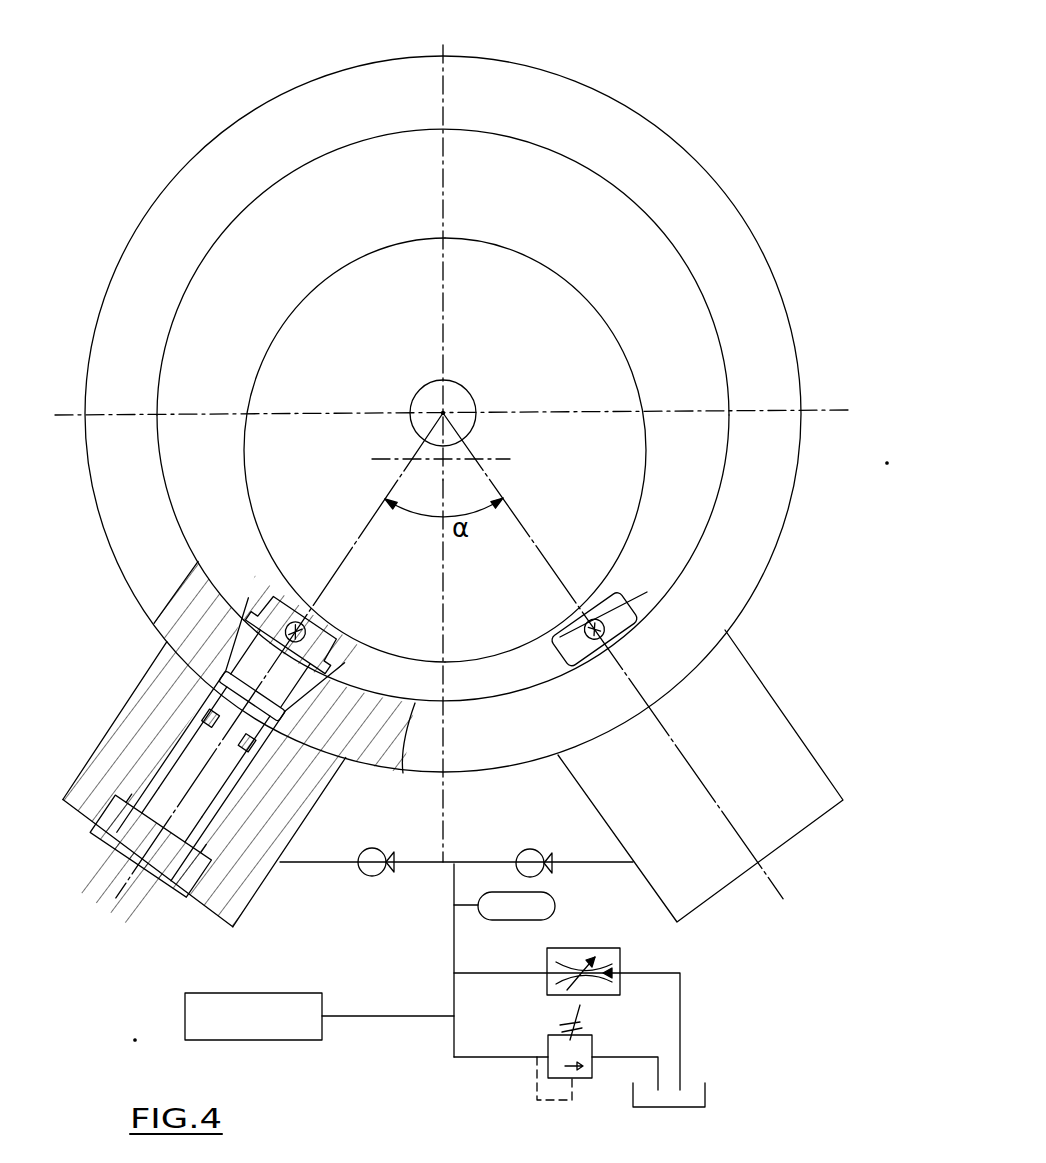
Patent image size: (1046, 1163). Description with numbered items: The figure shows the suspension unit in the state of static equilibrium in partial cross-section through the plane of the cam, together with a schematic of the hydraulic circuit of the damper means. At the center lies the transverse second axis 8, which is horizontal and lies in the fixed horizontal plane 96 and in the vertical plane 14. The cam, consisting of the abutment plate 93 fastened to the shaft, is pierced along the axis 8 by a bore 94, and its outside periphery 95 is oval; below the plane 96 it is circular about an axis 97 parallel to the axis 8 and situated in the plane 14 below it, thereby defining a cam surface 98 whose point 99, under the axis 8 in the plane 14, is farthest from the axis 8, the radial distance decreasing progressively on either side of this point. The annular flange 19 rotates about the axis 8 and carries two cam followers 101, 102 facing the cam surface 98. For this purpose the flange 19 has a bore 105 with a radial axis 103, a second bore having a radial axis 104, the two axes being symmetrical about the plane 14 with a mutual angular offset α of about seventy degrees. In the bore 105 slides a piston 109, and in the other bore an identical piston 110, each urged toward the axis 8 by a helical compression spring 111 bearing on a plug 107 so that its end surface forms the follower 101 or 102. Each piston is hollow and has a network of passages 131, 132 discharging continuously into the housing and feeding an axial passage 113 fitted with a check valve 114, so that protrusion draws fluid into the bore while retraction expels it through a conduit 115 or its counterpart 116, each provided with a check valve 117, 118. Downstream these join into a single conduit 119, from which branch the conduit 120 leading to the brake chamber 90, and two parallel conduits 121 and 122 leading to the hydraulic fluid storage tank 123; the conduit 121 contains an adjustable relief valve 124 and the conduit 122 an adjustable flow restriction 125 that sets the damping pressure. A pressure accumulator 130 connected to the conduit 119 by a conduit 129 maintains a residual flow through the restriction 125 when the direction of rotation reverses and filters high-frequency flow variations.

The transverse second axis 8 is at (455, 422).
The vertical plane 14 is at (444, 46).
The flange 19 is at (115, 485).
The fluid-tight chamber 90 is at (275, 1033).
The abutment plate (cam) 93 is at (525, 272).
The bore 94 is at (455, 388).
The outside periphery 95 is at (622, 365).
The horizontal plane 96 is at (655, 428).
The axis 97 is at (466, 458).
The cam surface 98 is at (623, 552).
The point 99 is at (450, 660).
The cam follower 101 is at (316, 625).
The cam follower 102 is at (590, 612).
The axis 103 is at (345, 560).
The axis 104 is at (540, 540).
The bore 105 is at (175, 765).
The plug 107 is at (180, 885).
The piston 109 is at (325, 785).
The piston 110 is at (618, 632).
The helical compression spring 111 is at (270, 825).
The axial passage 113 is at (385, 752).
The check valve 114 is at (210, 690).
The conduit 115 is at (255, 870).
The conduit 116 is at (575, 866).
The check valve 117 is at (385, 855).
The check valve 118 is at (520, 848).
The single conduit 119 is at (454, 905).
The conduit 120 is at (352, 1015).
The conduit 121 is at (470, 1056).
The conduit 122 is at (468, 972).
The hydraulic fluid storage tank 123 is at (708, 1083).
The adjustable relief valve 124 is at (595, 1040).
The adjustable flow restriction 125 is at (602, 948).
The conduit 129 is at (458, 905).
The pressure accumulator 130 is at (555, 908).
The network of passages 131 is at (325, 670).
The network of passages 132 is at (560, 660).